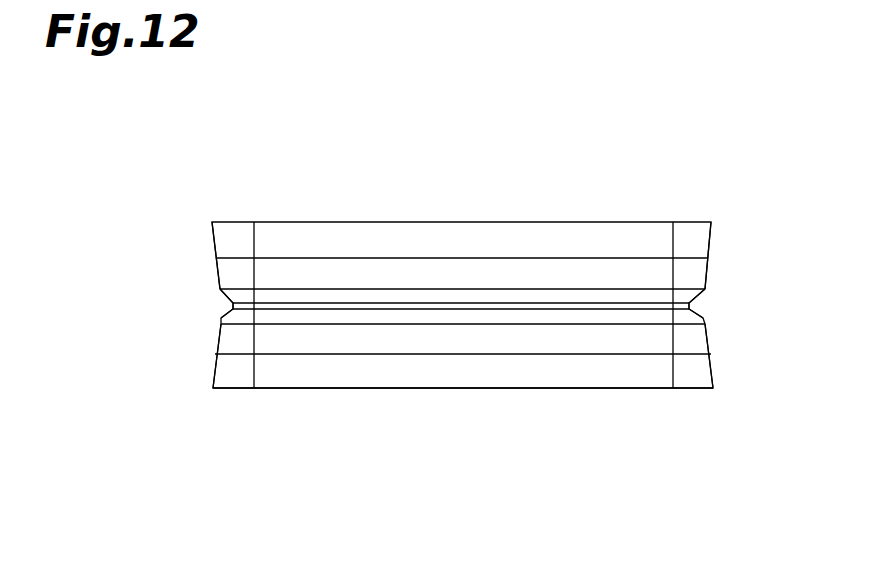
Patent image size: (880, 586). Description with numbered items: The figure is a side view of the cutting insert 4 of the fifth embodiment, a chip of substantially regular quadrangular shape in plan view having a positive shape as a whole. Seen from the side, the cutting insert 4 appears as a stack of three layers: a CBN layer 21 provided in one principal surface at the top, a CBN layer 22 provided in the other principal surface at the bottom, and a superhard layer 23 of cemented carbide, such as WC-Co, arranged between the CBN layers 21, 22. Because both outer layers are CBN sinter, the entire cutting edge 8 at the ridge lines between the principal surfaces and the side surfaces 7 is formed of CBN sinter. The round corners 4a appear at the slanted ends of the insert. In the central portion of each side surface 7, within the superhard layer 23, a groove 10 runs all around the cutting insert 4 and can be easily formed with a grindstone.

The cutting insert 4 is at (320, 142).
The round corner 4a is at (226, 252).
The side surface 7 is at (330, 367).
The cutting edge 8 is at (456, 222).
The groove 10 is at (230, 311).
The CBN layer 21 is at (610, 242).
The CBN layer 22 is at (640, 380).
The superhard layer 23 is at (568, 343).